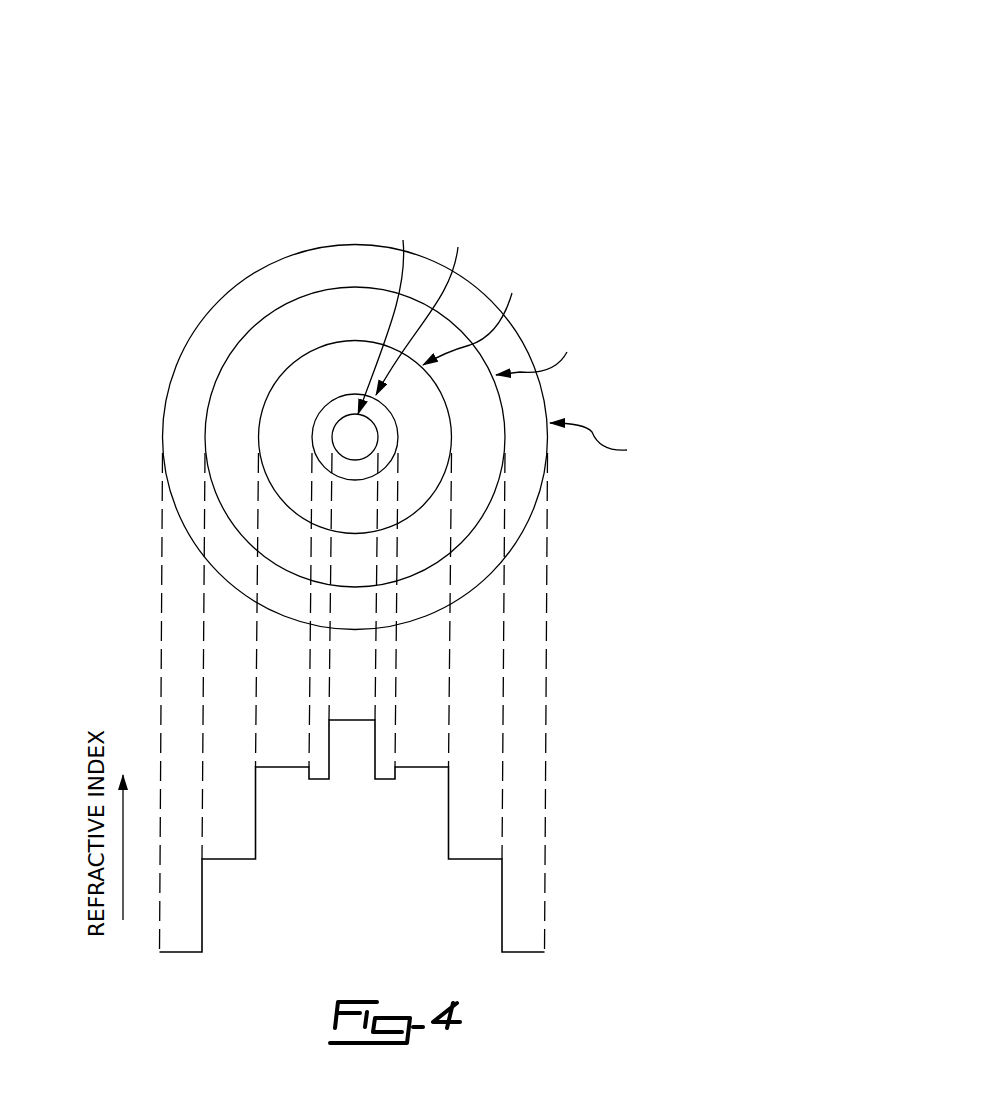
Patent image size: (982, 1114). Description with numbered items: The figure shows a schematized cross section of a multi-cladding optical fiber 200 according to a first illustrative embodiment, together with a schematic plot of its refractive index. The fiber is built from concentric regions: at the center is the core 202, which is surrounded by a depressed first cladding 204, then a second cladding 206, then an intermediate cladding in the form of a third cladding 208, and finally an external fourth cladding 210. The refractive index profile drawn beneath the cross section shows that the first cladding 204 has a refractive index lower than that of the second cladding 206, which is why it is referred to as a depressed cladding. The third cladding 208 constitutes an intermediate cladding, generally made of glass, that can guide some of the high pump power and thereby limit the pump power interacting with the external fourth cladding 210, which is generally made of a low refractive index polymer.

The multi-cladding optical fiber 200 is at (125, 102).
The core 202 is at (342, 417).
The depressed first cladding 204 is at (313, 425).
The second cladding 206 is at (285, 372).
The third cladding 208 is at (290, 302).
The external fourth cladding 210 is at (165, 408).